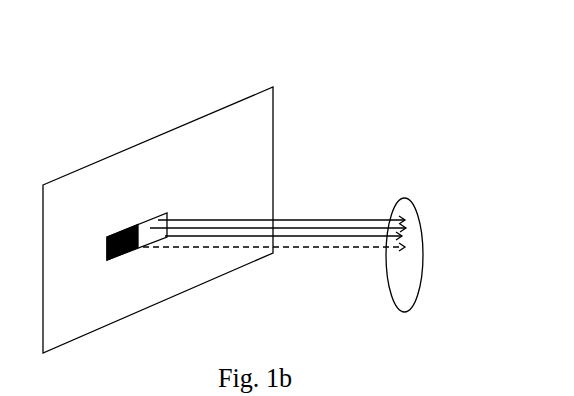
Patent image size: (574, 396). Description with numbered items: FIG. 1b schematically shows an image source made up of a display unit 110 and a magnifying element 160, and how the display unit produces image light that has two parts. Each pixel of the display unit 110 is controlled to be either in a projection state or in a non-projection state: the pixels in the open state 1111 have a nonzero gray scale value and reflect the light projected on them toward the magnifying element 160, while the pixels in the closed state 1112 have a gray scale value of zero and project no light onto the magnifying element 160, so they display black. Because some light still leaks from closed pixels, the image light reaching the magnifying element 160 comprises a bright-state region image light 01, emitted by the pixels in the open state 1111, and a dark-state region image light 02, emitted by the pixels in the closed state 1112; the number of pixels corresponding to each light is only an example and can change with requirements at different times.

The display unit 110 is at (177, 220).
The pixels in the open state 1111 is at (193, 160).
The pixels in the closed state 1112 is at (189, 145).
The magnifying element 160 is at (404, 246).
The bright-state region image light 01 is at (278, 221).
The dark-state region image light 02 is at (274, 257).